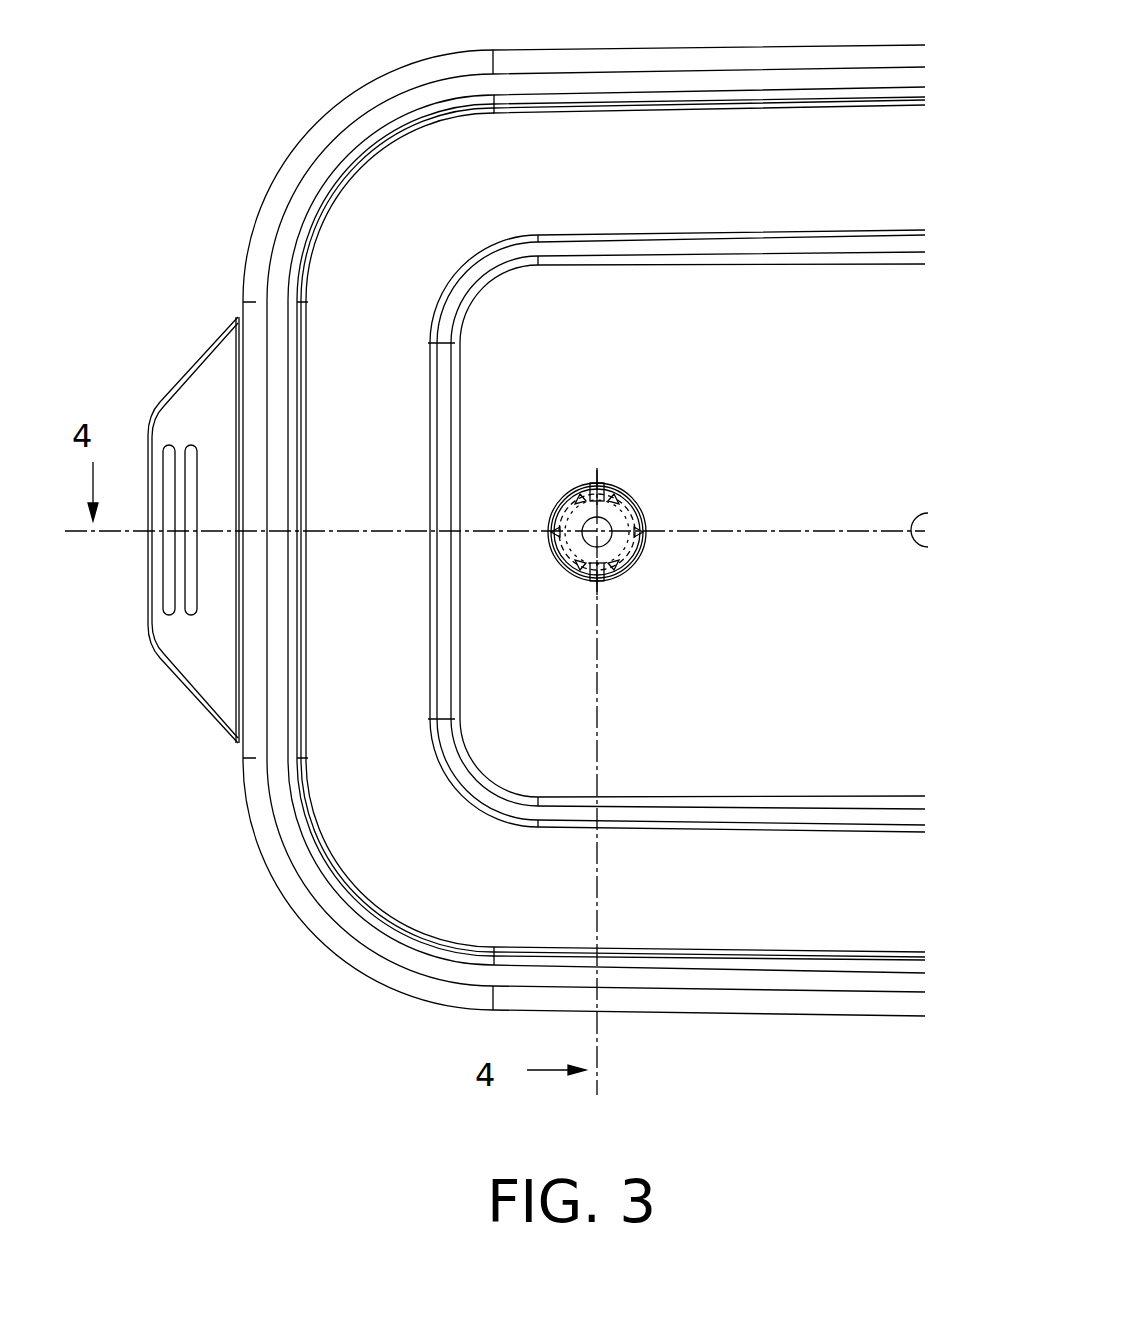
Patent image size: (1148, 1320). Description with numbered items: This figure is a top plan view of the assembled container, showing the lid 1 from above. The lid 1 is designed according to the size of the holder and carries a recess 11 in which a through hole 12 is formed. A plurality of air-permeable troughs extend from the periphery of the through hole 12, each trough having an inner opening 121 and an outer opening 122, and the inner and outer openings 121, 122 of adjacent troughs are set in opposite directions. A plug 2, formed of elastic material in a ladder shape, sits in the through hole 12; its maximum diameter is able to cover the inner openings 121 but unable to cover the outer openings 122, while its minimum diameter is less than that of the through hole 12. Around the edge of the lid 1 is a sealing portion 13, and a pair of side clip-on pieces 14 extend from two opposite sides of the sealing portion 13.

The lid 1 is at (298, 912).
The sealing portion 13 is at (312, 167).
The side clip-on pieces 14 is at (197, 410).
The plug 2 is at (640, 515).
The recess 11 is at (621, 575).
The through hole 12 is at (560, 566).
The inner openings 121 is at (573, 490).
The outer openings 122 is at (612, 482).